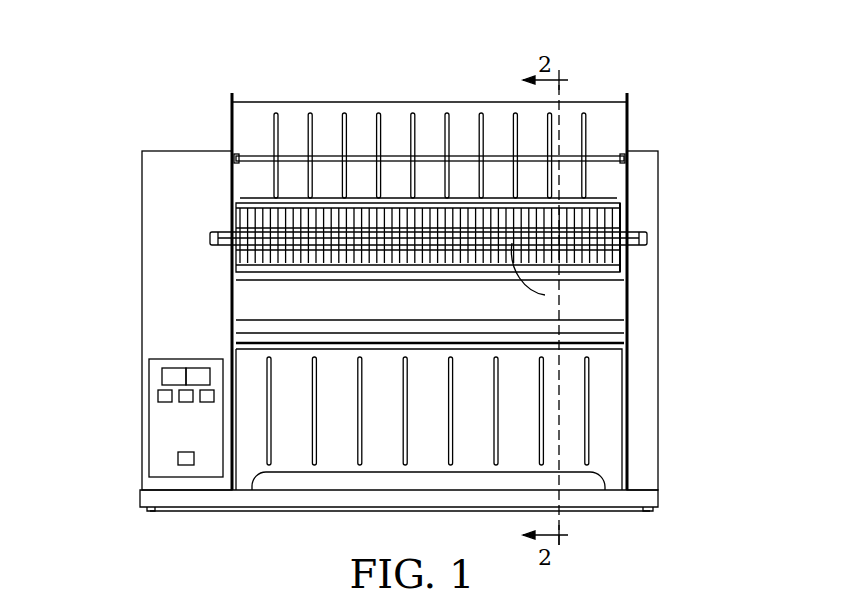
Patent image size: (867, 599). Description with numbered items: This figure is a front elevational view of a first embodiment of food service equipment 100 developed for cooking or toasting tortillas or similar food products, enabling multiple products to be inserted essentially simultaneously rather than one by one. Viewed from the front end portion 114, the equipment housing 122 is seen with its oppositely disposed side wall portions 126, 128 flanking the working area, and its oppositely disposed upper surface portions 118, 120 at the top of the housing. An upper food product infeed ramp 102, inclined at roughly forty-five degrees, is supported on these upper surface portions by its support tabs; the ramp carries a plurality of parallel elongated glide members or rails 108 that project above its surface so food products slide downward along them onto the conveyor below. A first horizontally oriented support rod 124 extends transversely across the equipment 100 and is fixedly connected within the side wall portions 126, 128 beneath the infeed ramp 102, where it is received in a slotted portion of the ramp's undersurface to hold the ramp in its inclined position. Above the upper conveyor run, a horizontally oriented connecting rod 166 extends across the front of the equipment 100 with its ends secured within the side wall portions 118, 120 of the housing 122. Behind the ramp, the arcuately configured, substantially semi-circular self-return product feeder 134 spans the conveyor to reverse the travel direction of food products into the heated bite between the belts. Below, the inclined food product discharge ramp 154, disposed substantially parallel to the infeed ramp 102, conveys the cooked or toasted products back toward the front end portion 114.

The food service equipment 100 is at (687, 155).
The upper food product infeed ramp 102 is at (345, 102).
The elongated glide members or rails 108 is at (480, 130).
The front end portion 114 is at (290, 492).
The upper surface portion 118 is at (170, 151).
The upper surface portion 120 is at (643, 151).
The equipment housing 122 is at (175, 303).
The first horizontally oriented support rod 124 is at (210, 237).
The side wall portion 126 is at (222, 215).
The side wall portion 128 is at (640, 260).
The self-return product feeder 134 is at (545, 295).
The inclined food product discharge ramp 154 is at (522, 420).
The horizontally oriented connecting rod 166 is at (262, 156).